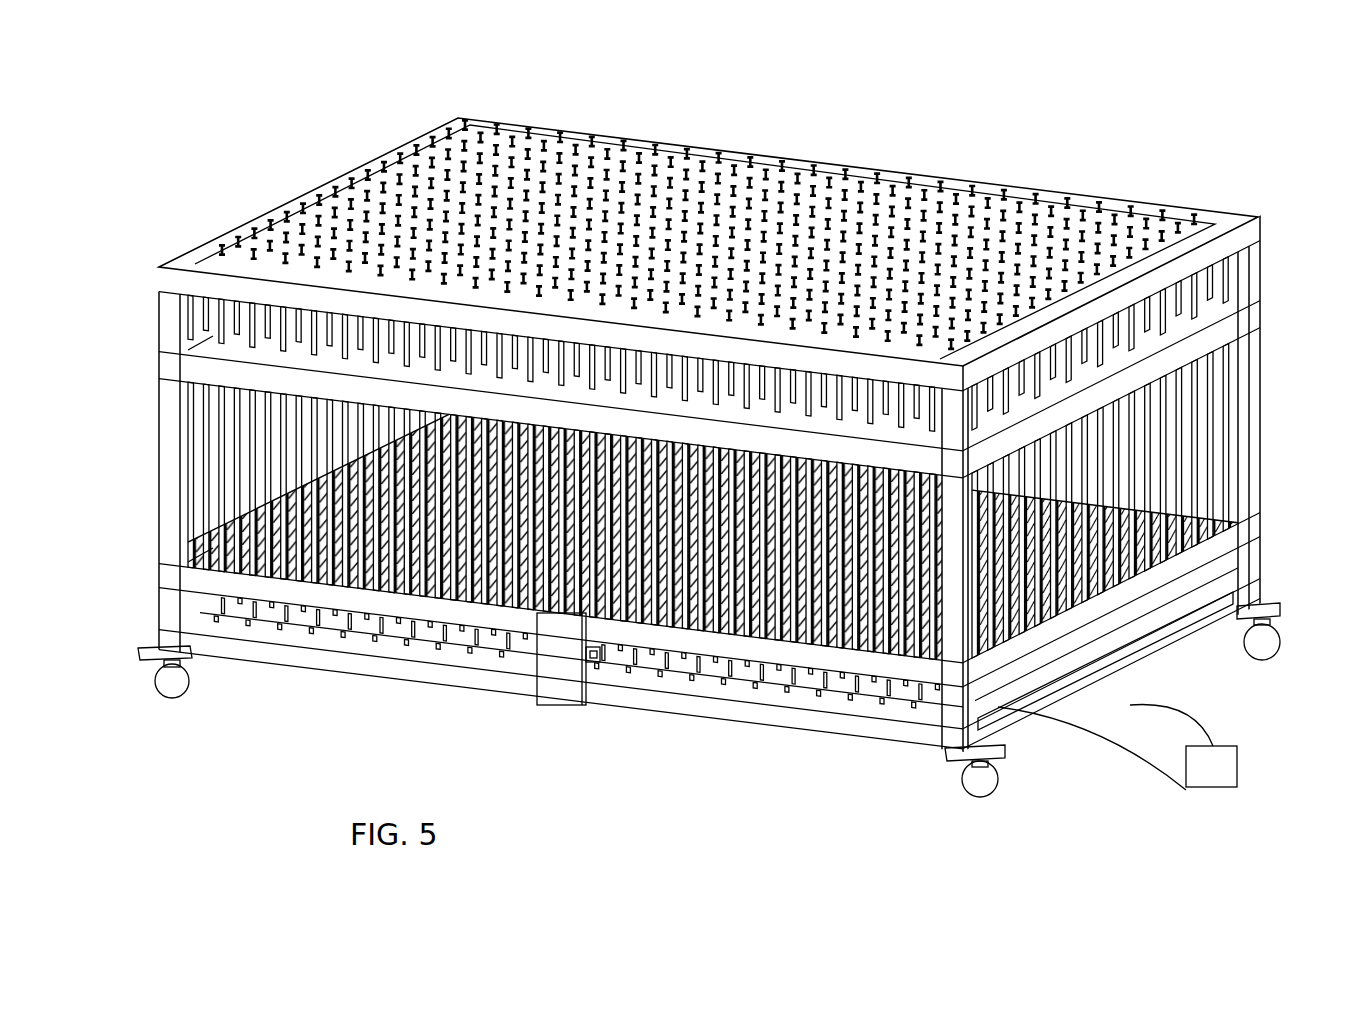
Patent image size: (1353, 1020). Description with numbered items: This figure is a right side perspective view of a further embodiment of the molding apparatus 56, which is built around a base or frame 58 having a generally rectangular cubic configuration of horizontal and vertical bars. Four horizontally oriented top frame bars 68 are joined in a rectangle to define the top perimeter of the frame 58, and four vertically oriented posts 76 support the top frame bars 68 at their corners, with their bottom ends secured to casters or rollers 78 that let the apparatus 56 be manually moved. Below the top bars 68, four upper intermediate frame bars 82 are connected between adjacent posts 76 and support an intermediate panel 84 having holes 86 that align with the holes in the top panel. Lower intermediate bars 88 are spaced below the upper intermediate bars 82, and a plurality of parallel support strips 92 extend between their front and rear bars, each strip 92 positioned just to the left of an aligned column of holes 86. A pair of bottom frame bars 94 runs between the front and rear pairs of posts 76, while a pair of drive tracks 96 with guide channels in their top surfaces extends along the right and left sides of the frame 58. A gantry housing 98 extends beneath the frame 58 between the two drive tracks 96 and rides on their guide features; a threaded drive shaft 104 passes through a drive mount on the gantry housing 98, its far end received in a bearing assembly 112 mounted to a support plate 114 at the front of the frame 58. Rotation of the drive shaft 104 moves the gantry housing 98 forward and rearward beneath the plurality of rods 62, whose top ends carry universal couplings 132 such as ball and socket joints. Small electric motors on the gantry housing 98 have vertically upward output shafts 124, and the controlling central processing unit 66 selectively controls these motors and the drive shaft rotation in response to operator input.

The apparatus 56 is at (1028, 94).
The frame 58 is at (150, 416).
The rods 62 is at (213, 452).
The controlling central processing unit 66 is at (1238, 765).
The top frame bars 68 is at (309, 197).
The posts 76 is at (159, 496).
The rollers 78 is at (173, 697).
The upper intermediate frame bars 82 is at (207, 337).
The intermediate panel 84 is at (1138, 356).
The holes 86 is at (276, 340).
The lower intermediate bars 88 is at (207, 540).
The support strips 92 is at (453, 577).
The bottom frame bars 94 is at (1213, 578).
The drive tracks 96 is at (235, 600).
The gantry housing 98 is at (343, 643).
The drive shaft 104 is at (600, 660).
The bearing assembly 112 is at (593, 667).
The support plate 114 is at (563, 673).
The output shafts 124 is at (277, 627).
The universal couplings 132 is at (386, 160).